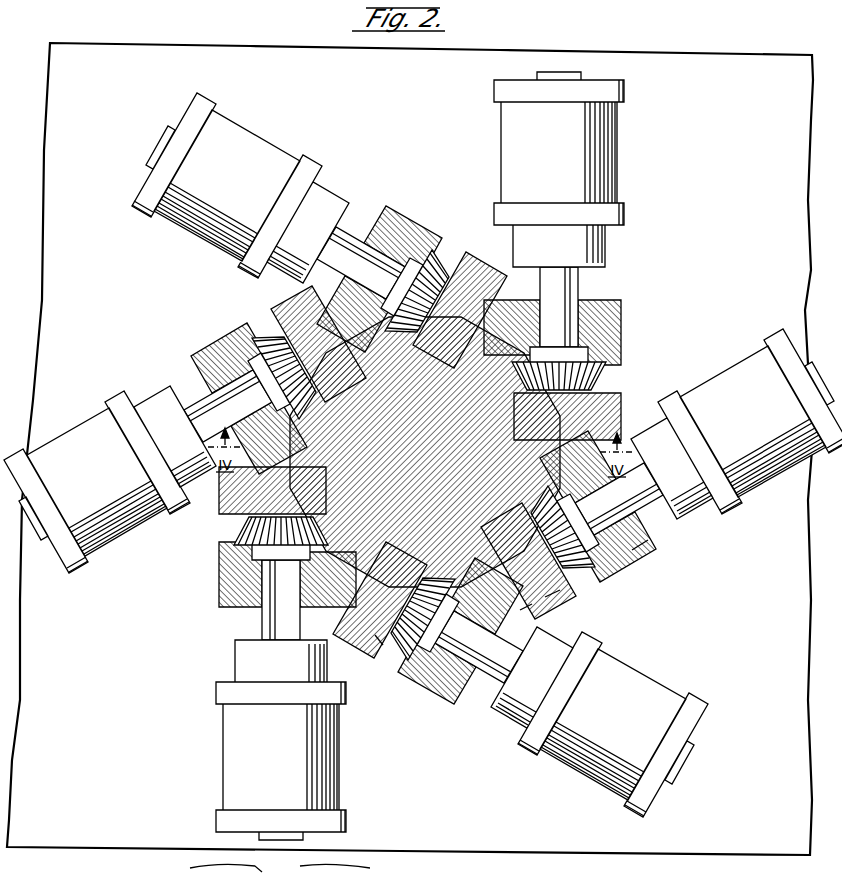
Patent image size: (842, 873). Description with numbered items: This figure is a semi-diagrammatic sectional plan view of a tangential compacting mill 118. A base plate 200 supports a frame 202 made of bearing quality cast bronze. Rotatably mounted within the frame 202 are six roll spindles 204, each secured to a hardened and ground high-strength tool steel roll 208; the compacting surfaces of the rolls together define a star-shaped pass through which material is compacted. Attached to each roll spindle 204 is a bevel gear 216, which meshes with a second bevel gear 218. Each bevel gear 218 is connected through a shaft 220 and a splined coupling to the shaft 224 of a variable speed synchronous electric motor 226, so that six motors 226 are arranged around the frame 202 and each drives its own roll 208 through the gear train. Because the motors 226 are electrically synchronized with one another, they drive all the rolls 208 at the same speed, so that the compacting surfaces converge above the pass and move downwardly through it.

The base plate 200 is at (690, 60).
The compacting mill 118 is at (620, 313).
The frame 202 is at (632, 550).
The roll spindle 204 is at (545, 597).
The roll 208 is at (520, 610).
The bevel gear 216 is at (375, 635).
The bevel gear 218 is at (440, 265).
The shaft 220 is at (352, 240).
The shaft 224 is at (500, 700).
The variable speed synchronous electric motor 226 is at (252, 140).